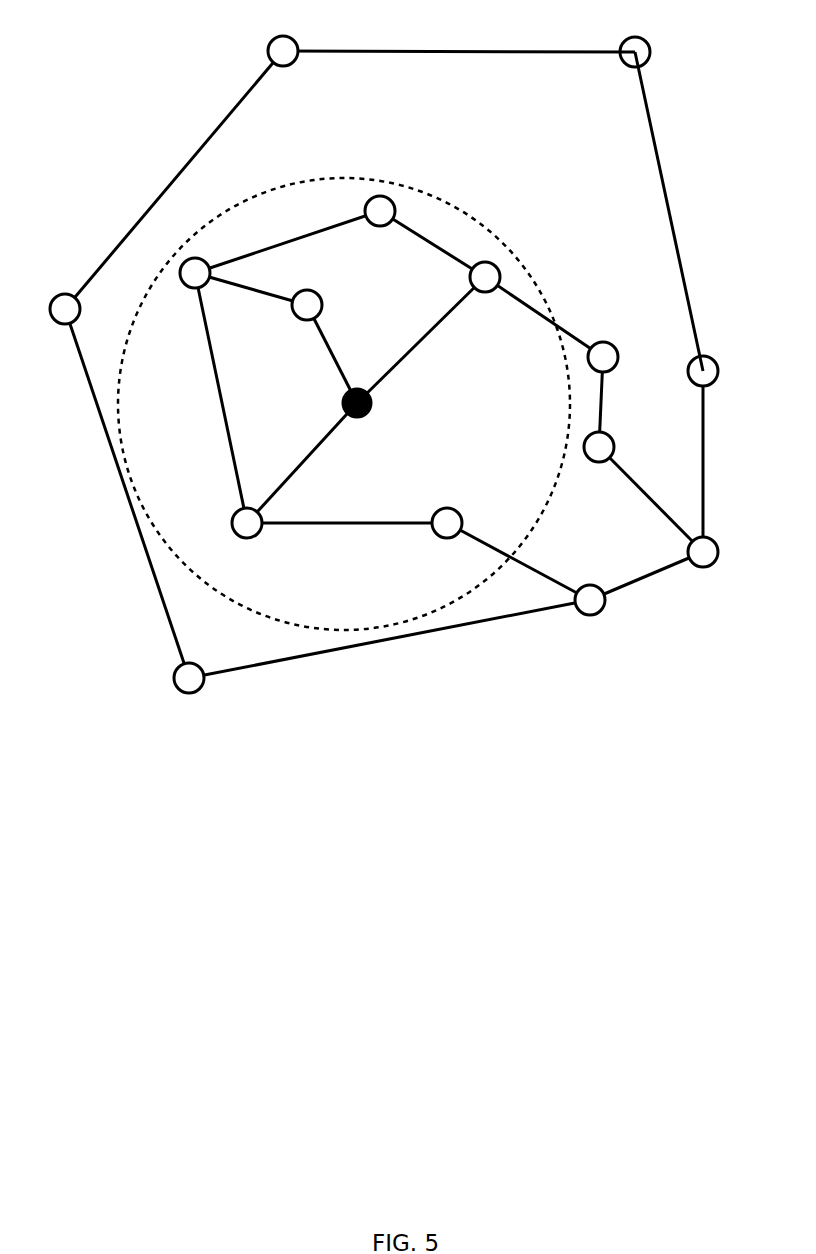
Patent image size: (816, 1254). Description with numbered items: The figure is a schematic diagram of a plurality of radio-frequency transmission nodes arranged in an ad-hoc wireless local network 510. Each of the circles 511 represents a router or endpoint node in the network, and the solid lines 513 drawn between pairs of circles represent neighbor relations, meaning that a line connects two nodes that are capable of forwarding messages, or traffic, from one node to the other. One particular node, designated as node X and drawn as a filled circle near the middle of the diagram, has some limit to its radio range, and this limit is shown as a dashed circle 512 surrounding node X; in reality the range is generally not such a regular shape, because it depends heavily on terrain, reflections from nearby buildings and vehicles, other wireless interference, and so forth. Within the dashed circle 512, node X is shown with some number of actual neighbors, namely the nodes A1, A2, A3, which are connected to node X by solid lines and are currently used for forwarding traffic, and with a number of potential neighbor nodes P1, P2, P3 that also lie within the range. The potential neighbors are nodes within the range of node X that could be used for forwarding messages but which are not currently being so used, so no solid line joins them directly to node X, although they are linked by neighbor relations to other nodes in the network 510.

The ad-hoc wireless local network 510 is at (165, 790).
The circles 511 is at (310, 106).
The dashed circle 512 is at (490, 199).
The solid lines 513 is at (483, 82).
The potential neighbor node P1 is at (400, 259).
The potential neighbor node P2 is at (460, 567).
The potential neighbor node P3 is at (235, 312).
The actual neighbor node A1 is at (309, 344).
The actual neighbor node A2 is at (503, 331).
The actual neighbor node A3 is at (277, 567).
The node X is at (380, 446).